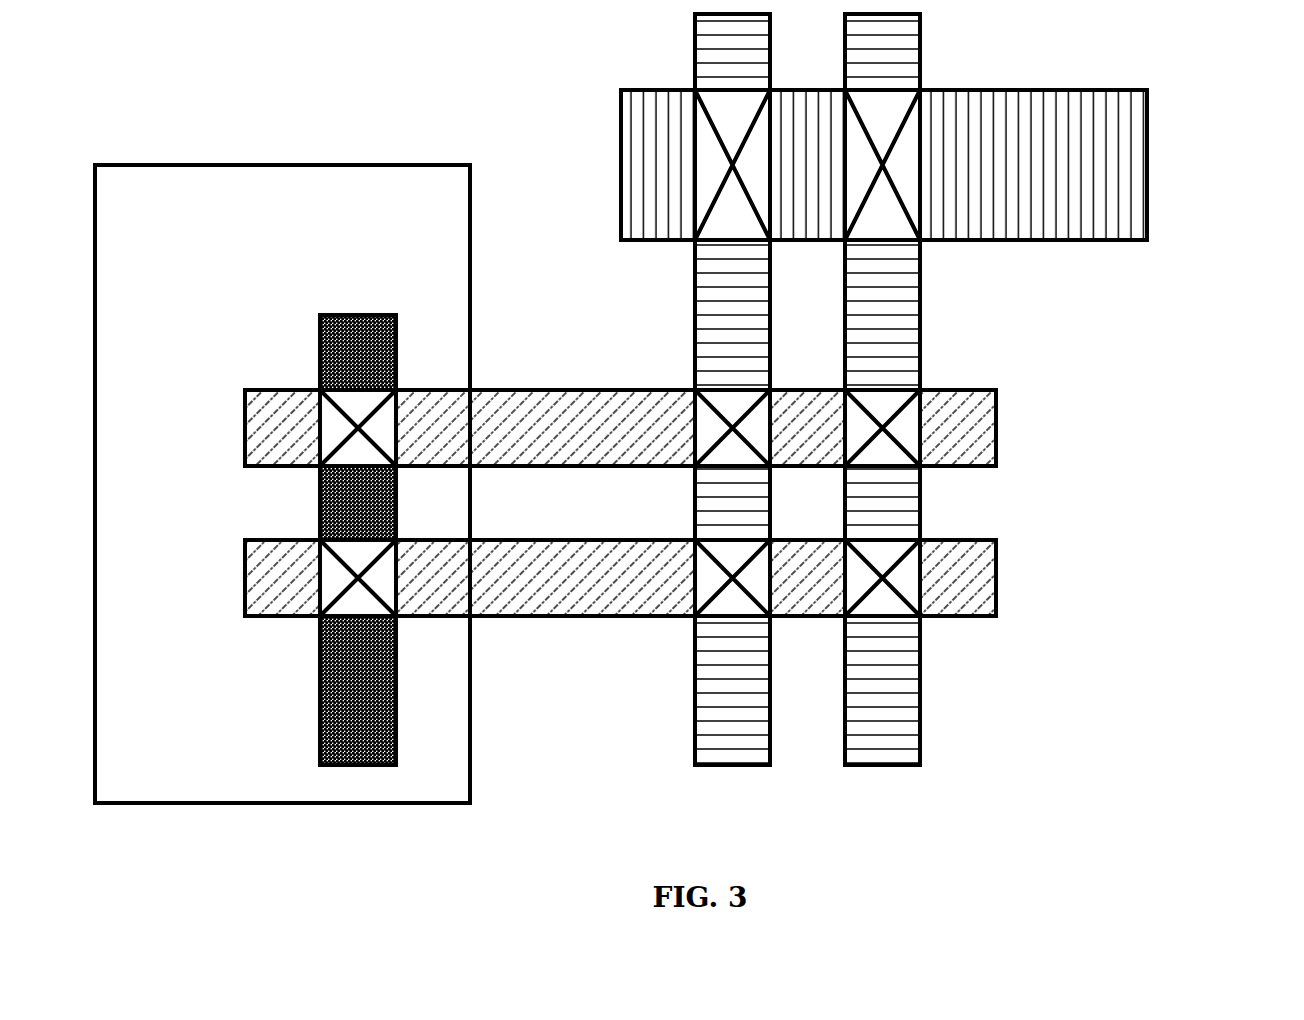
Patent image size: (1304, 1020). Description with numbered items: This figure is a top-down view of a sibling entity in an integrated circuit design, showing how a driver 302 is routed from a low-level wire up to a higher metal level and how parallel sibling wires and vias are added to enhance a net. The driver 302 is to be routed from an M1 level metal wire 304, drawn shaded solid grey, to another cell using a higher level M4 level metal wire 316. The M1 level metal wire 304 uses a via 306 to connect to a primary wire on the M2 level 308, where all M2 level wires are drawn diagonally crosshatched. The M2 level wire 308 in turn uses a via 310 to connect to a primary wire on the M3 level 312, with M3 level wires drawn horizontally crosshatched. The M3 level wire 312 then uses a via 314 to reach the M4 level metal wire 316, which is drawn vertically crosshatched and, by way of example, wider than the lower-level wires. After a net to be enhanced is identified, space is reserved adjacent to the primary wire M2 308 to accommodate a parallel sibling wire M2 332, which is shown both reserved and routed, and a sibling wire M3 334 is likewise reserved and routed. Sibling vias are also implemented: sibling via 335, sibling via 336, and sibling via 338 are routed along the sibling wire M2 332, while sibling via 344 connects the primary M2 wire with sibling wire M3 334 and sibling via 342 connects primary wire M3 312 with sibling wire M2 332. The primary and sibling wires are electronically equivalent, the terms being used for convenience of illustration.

The driver 302 is at (200, 164).
The M1 level metal wire 304 is at (354, 313).
The via 306 is at (384, 557).
The primary wire on the M2 level 308 is at (1126, 576).
The via 310 is at (705, 619).
The primary wire on the M3 level 312 is at (680, 812).
The via 314 is at (696, 97).
The M4 level metal wire 316 is at (1108, 88).
The sibling wire M2 332 is at (1126, 426).
The sibling wire M3 334 is at (928, 802).
The sibling via 335 is at (318, 395).
The sibling via 336 is at (930, 383).
The sibling via 338 is at (937, 80).
The sibling via 342 is at (690, 393).
The sibling via 344 is at (918, 620).